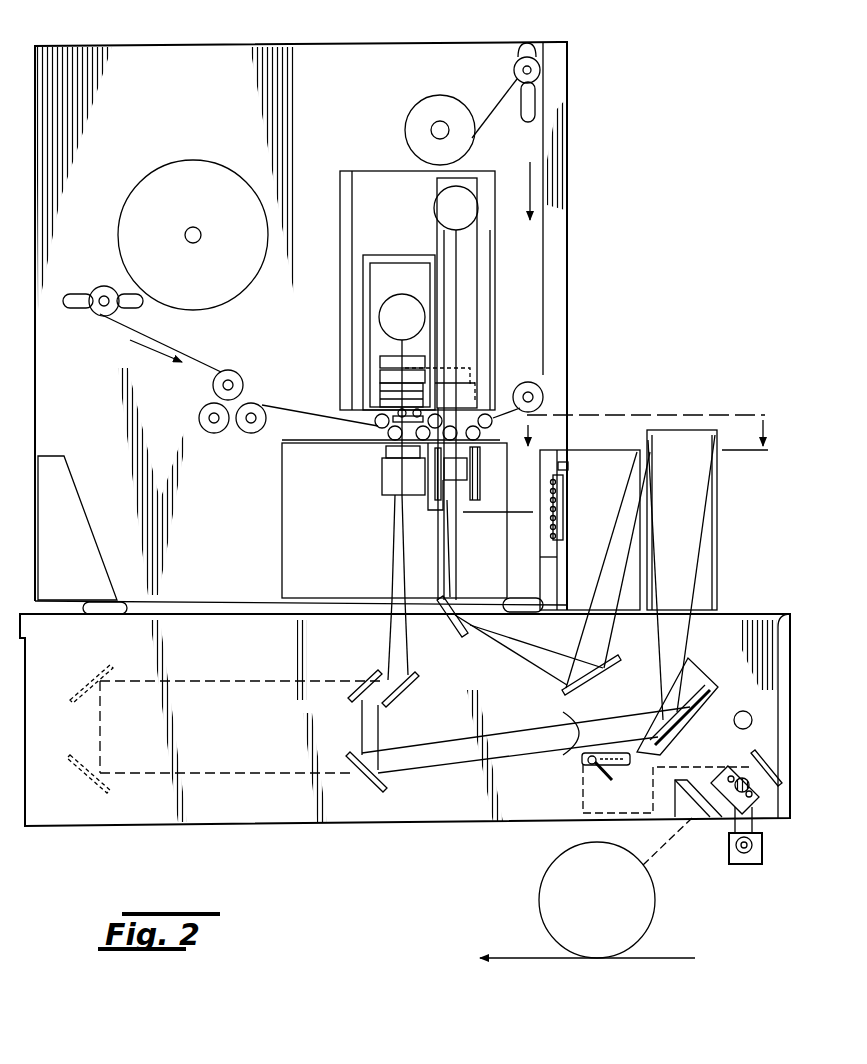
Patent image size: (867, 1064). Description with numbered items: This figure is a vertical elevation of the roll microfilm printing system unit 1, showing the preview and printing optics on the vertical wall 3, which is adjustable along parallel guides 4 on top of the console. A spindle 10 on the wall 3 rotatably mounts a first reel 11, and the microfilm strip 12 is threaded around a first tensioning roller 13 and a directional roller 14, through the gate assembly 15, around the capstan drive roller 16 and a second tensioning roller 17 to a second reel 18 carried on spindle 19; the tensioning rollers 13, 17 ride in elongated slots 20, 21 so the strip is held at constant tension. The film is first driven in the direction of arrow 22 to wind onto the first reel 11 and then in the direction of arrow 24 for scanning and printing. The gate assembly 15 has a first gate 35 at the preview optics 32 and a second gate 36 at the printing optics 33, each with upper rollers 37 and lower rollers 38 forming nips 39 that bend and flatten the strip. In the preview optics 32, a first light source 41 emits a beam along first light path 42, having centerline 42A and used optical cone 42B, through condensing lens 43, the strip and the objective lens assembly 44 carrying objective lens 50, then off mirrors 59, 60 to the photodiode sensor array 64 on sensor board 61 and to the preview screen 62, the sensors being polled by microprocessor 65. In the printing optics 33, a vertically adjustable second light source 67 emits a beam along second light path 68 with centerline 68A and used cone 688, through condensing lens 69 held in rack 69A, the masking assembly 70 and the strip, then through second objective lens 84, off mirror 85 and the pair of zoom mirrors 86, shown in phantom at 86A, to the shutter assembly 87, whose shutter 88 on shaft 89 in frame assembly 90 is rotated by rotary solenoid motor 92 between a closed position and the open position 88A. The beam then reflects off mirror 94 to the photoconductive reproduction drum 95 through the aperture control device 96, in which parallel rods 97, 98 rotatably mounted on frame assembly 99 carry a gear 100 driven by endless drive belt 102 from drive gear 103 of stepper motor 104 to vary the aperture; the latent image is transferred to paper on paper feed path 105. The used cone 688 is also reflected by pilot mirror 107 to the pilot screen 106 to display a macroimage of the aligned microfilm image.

The roll microfilm printing system unit 1 is at (595, 193).
The vertical wall 3 is at (186, 46).
The parallel guides 4 is at (116, 608).
The spindle 10 is at (437, 125).
The first reel 11 is at (417, 118).
The microfilm strip 12 is at (563, 218).
The first tensioning roller 13 is at (540, 70).
The directional roller 14 is at (542, 393).
The gate assembly 15 is at (378, 447).
The capstan drive roller 16 is at (212, 433).
The second tensioning roller 17 is at (93, 310).
The second reel 18 is at (228, 282).
The spindle 19 is at (185, 235).
The elongated slot 20 is at (535, 103).
The elongated slot 21 is at (132, 308).
The arrow 22 is at (130, 346).
The arrow 24 is at (530, 198).
The preview optics 32 is at (470, 303).
The printing optics 33 is at (393, 347).
The first gate 35 is at (480, 420).
The second gate 36 is at (376, 422).
The upper rollers 37 is at (488, 428).
The lower rollers 38 is at (492, 473).
The nip 39 is at (380, 444).
The first light source 41 is at (438, 206).
The first light path 42 is at (462, 265).
The centerline of the first light beam 42A is at (480, 570).
The used portion of the optical cone of the first light beam 42B is at (452, 557).
The condensing lens 43 is at (465, 368).
The objective lens assembly 44 is at (482, 490).
The objective lens 50 is at (443, 482).
The mirror 59 is at (445, 632).
The mirror 60 is at (598, 672).
The sensor board 61 is at (563, 502).
The preview screen 62 is at (592, 450).
The linear array of photodiode sensors 64 is at (568, 470).
The microprocessor 65 is at (555, 572).
The second light source 67 is at (398, 295).
The second light path 68 is at (395, 362).
The centerline of the printing optics 68A is at (392, 640).
The condensing lens 69 is at (380, 376).
The rack 69A is at (380, 387).
The masking assembly 70 is at (420, 415).
The second objective lens 84 is at (382, 483).
The mirror 85 is at (410, 695).
The zoom mirrors 86 is at (355, 690).
The phantom position of zoom mirrors 86A is at (90, 695).
The shutter assembly 87 is at (580, 773).
The shutter 88 is at (606, 780).
The open position of shutter 88A is at (617, 748).
The shaft 89 is at (580, 763).
The frame assembly 90 is at (583, 805).
The rotary solenoid motor 92 is at (587, 747).
The mirror 94 is at (773, 753).
The photoconductive reproduction drum 95 is at (545, 884).
The aperture control device 96 is at (763, 818).
The parallel rod 97 is at (720, 773).
The parallel rod 98 is at (757, 783).
The frame assembly 99 is at (683, 820).
The gear 100 is at (741, 768).
The endless drive belt 102 is at (733, 827).
The drive gear 103 is at (735, 855).
The stepper motor 104 is at (752, 866).
The paper feed path 105 is at (655, 958).
The pilot screen 106 is at (692, 415).
The pilot mirror 107 is at (718, 690).
The used portion of the optical cone of the second light beam 688 is at (392, 587).